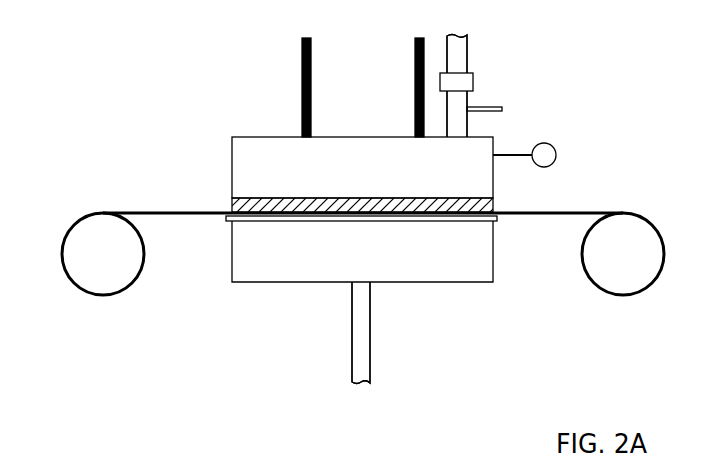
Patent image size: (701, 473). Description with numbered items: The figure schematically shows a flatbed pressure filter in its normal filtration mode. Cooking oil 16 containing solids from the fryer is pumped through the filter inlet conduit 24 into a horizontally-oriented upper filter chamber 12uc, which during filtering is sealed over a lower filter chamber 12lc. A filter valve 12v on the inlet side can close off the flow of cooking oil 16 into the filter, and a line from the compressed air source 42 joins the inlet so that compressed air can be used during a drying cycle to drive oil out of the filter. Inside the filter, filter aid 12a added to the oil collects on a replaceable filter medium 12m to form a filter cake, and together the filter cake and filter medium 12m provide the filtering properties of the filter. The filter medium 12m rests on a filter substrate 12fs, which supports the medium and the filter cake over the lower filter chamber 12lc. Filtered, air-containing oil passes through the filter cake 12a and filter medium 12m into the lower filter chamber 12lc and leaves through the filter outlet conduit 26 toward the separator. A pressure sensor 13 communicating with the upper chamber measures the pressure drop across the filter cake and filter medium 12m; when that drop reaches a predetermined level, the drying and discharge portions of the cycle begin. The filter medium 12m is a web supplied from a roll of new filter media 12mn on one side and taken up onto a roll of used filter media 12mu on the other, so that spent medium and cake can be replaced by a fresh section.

The upper filter chamber 12uc is at (244, 157).
The lower filter chamber 12lc is at (273, 273).
The filter aid 12a is at (470, 198).
The filter medium 12m is at (258, 214).
The filter substrate 12fs is at (472, 217).
The filter valve 12v is at (457, 81).
The roll of used filter media 12mu is at (95, 272).
The roll of new filter media 12mn is at (625, 273).
The pressure sensor 13 is at (556, 155).
The cooking oil 16 is at (453, 45).
The filter inlet conduit 24 is at (460, 55).
The filter outlet conduit 26 is at (359, 331).
The compressed air source 42 is at (490, 109).